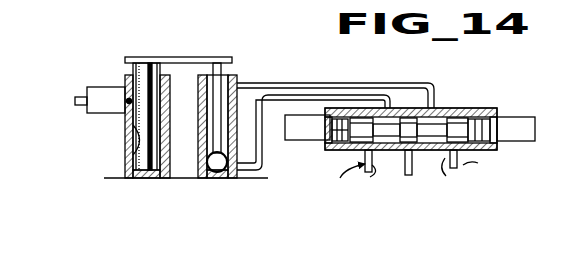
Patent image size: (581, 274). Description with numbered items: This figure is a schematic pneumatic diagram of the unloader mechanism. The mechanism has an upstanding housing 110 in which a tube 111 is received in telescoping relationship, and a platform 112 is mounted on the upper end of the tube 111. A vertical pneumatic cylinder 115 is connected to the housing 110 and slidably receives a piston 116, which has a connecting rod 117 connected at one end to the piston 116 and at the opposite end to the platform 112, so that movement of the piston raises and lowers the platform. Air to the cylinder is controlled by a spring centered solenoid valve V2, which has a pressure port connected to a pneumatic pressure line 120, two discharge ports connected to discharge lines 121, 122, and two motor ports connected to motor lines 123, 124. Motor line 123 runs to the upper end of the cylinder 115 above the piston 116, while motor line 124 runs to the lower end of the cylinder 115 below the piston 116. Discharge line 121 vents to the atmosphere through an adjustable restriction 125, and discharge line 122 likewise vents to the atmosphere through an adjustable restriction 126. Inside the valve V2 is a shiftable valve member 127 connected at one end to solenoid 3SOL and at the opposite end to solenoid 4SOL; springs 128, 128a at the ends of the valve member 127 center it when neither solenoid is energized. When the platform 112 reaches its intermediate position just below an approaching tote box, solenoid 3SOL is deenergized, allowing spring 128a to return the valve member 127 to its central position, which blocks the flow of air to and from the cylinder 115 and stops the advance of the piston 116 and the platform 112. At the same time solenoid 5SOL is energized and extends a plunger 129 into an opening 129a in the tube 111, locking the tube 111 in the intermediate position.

The upstanding housing 110 is at (125, 172).
The tube 111 is at (142, 70).
The platform 112 is at (205, 57).
The vertical pneumatic cylinder 115 is at (242, 100).
The piston 116 is at (212, 176).
The connecting rod 117 is at (221, 70).
The pneumatic pressure line 120 is at (411, 177).
The discharge line 121 is at (373, 177).
The discharge line 122 is at (456, 177).
The motor line 123 is at (357, 83).
The motor line 124 is at (288, 98).
The adjustable restriction 125 is at (342, 184).
The adjustable restriction 126 is at (470, 163).
The shiftable valve member 127 is at (457, 118).
The spring 128 is at (332, 152).
The spring 128a is at (496, 150).
The plunger 129 is at (127, 101).
The opening 129a is at (134, 147).
The spring centered solenoid valve V2 is at (489, 107).
The solenoid 3SOL is at (287, 138).
The solenoid 4SOL is at (552, 110).
The solenoid 5SOL is at (110, 88).